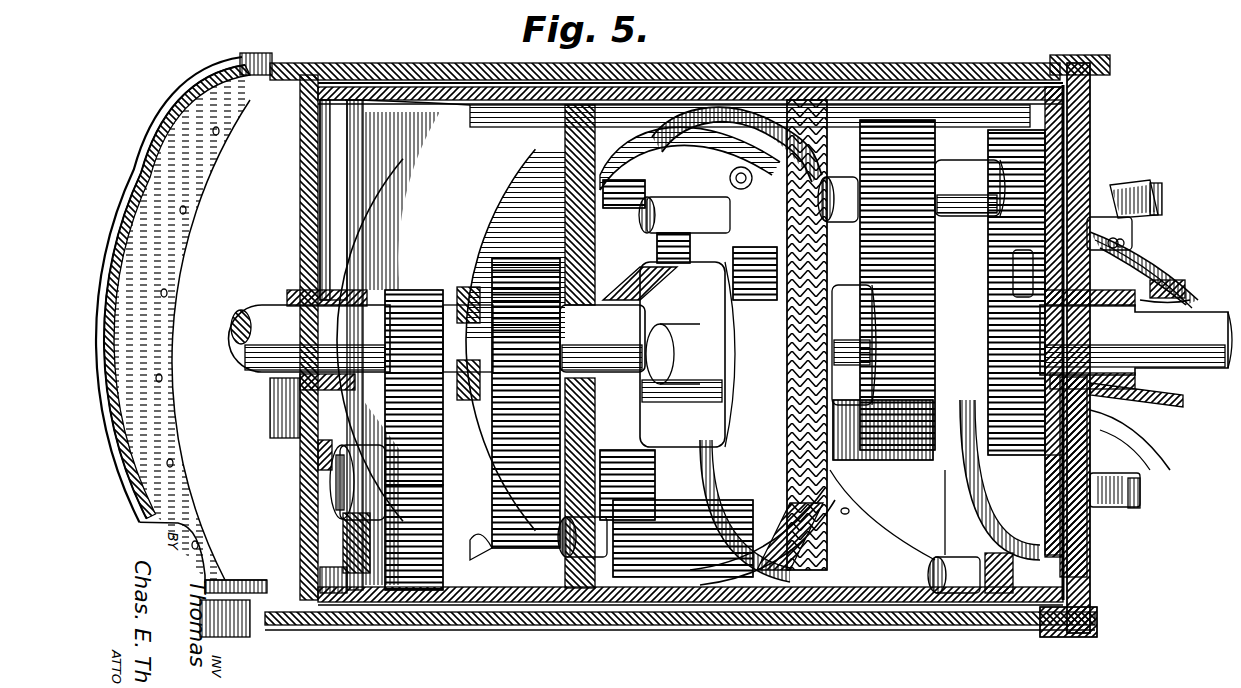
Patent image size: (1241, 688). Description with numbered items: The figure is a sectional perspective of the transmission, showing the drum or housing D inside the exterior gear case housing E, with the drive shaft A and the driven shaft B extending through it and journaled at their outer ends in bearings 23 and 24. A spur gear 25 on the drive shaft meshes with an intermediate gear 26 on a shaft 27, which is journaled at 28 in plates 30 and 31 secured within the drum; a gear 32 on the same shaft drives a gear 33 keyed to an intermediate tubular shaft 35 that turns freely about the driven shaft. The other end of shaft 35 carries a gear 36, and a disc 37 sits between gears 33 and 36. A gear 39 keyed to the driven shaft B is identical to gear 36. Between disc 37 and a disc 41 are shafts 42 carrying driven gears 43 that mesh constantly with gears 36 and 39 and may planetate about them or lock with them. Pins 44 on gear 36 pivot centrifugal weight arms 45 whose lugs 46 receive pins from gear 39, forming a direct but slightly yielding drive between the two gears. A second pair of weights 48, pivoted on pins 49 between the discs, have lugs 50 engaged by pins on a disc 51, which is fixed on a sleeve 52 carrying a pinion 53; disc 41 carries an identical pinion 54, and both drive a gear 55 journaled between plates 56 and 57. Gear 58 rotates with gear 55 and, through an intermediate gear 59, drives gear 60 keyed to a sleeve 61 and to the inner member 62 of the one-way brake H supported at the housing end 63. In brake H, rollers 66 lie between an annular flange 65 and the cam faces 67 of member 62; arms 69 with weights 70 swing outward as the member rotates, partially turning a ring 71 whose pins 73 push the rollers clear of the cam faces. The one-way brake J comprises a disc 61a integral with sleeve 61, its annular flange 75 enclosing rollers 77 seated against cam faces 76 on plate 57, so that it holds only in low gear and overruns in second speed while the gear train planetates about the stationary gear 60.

The bearing 23 is at (285, 390).
The bearing 24 is at (1165, 395).
The spur gear 25 is at (398, 285).
The intermediate gear 26 is at (395, 532).
The shaft 27 is at (332, 482).
The journal 28 is at (345, 455).
The plate 30 is at (330, 208).
The plate 31 is at (446, 215).
The gear 32 is at (478, 542).
The gear 33 is at (530, 260).
The intermediate tubular shaft 35 is at (598, 334).
The gear 36 is at (630, 236).
The disc 37 is at (544, 176).
The gear 39 is at (735, 505).
The disc 41 is at (700, 110).
The shafts 42 is at (565, 545).
The driven gears 43 is at (653, 575).
The pins 44 is at (665, 352).
The centrifugally actuated weight arm 45 is at (715, 321).
The lug 46 is at (735, 470).
The centrifugally actuated weights 48 is at (650, 135).
The pins 49 is at (694, 210).
The lugs 50 is at (737, 135).
The disc 51 is at (790, 130).
The sleeve 52 is at (854, 320).
The pinion gear 53 is at (890, 462).
The pinion gear 54 is at (870, 440).
The gear 55 is at (880, 135).
The plate 56 is at (848, 170).
The plate 57 is at (944, 494).
The gear 58 is at (1030, 150).
The intermediate gear 59 is at (990, 203).
The gear 60 is at (1005, 462).
The sleeve 61 is at (1140, 378).
The disc 61a is at (1065, 530).
The inner member 62 is at (1187, 300).
The end of gear case housing 63 is at (1090, 115).
The annular flange 65 is at (1095, 215).
The rollers 66 is at (1110, 190).
The cam faces 67 is at (1145, 270).
The arms 69 is at (1130, 480).
The weights 70 is at (1150, 195).
The ring 71 is at (1140, 235).
The pins 73 is at (1165, 240).
The annular flange 75 is at (985, 605).
The cam faces 76 is at (935, 565).
The rollers 77 is at (980, 540).
The drive shaft A is at (278, 341).
The driven shaft B is at (1136, 340).
The drum or housing D is at (574, 612).
The gear case housing E is at (731, 636).
The brake H is at (1167, 219).
The one-way brake J is at (962, 580).